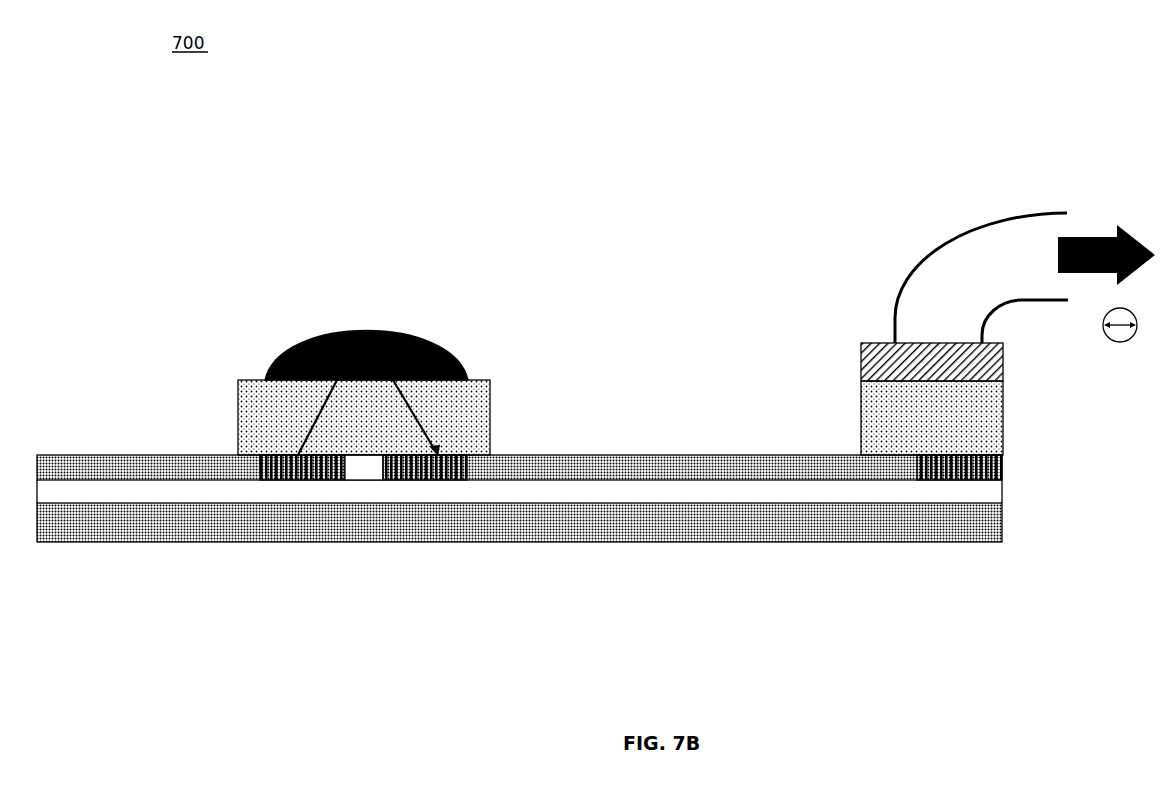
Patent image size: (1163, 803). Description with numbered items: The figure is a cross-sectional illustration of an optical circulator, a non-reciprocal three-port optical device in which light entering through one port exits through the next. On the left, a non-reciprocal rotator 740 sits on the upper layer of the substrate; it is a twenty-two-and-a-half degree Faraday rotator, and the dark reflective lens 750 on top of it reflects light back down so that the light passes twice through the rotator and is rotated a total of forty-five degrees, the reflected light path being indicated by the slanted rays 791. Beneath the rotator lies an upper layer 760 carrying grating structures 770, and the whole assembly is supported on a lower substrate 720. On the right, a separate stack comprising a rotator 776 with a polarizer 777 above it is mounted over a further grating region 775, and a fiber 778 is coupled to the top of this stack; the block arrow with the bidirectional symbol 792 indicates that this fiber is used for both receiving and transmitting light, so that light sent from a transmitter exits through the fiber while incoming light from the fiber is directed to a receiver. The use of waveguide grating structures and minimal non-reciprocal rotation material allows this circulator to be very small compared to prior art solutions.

The substrate 720 is at (290, 478).
The non-reciprocal rotator 740 is at (255, 425).
The light emitting element 750 is at (452, 353).
The single fiber 760 is at (788, 465).
The electrode pattern 770 is at (430, 480).
The electrode pattern 775 is at (975, 482).
The rotator 776 is at (910, 427).
The polarizer 777 is at (870, 362).
The fiber 778 is at (920, 257).
The light path 791 is at (427, 428).
The direction indicator 792 is at (1098, 282).